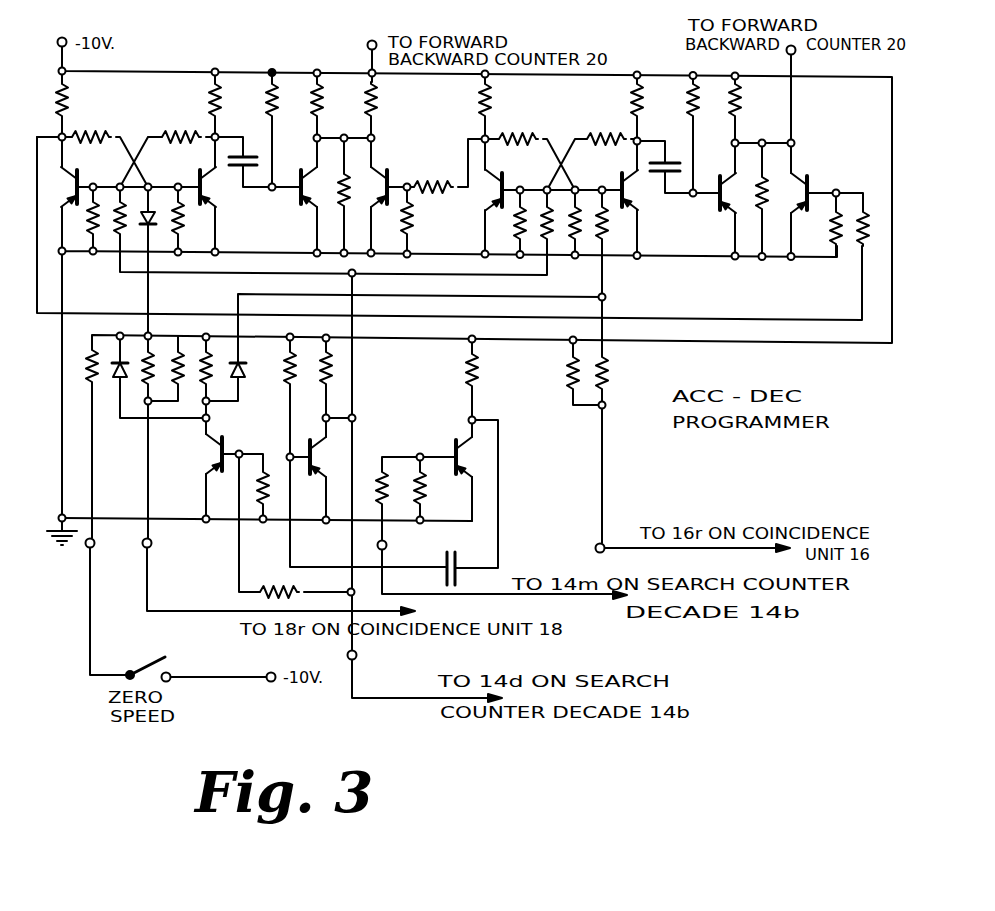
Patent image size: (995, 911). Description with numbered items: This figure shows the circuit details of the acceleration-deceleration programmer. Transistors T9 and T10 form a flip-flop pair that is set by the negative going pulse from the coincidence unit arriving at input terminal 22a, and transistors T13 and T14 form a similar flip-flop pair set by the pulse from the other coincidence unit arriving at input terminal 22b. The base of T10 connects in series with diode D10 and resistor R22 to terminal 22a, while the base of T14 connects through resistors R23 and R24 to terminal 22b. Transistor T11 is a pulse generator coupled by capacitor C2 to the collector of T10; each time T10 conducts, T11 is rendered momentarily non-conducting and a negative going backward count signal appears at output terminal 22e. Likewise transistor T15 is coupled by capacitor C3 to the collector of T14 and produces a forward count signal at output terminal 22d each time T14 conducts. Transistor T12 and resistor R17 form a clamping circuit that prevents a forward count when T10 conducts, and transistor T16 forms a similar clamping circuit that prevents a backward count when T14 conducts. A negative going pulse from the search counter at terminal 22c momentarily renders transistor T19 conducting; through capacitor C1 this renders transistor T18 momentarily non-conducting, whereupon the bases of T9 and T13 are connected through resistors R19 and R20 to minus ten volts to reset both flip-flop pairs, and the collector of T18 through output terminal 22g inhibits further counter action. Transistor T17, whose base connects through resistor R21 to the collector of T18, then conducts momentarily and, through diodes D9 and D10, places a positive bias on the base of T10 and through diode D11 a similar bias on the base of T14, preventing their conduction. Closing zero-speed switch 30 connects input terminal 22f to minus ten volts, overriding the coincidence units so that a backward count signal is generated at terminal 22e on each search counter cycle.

The transistor T9 is at (84, 178).
The transistor T10 is at (190, 176).
The transistor T11 is at (294, 198).
The transistor T12 is at (393, 180).
The transistor T13 is at (508, 185).
The transistor T14 is at (614, 183).
The transistor T15 is at (712, 202).
The transistor T16 is at (814, 182).
The transistor T17 is at (229, 446).
The transistor T18 is at (303, 470).
The transistor T19 is at (448, 450).
The resistor R17 is at (414, 215).
The resistor R19 is at (113, 232).
The resistor R20 is at (553, 225).
The resistor R21 is at (278, 570).
The resistor R22 is at (156, 352).
The resistor R23 is at (379, 100).
The resistor R24 is at (609, 370).
The capacitor C1 is at (460, 560).
The capacitor C2 is at (246, 150).
The capacitor C3 is at (672, 157).
The diode D9 is at (112, 372).
The diode D10 is at (156, 220).
The diode D11 is at (246, 372).
The input terminal 22a is at (151, 546).
The input terminal 22b is at (596, 548).
The terminal 22c is at (386, 548).
The output terminal 22d is at (796, 52).
The output terminal 22e is at (367, 48).
The input terminal 22f is at (94, 546).
The output terminal 22g is at (357, 655).
The zero-speed switch 30 is at (168, 668).